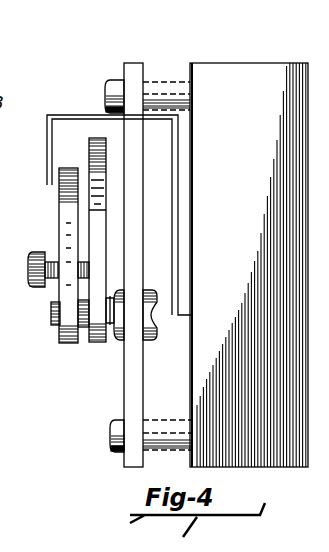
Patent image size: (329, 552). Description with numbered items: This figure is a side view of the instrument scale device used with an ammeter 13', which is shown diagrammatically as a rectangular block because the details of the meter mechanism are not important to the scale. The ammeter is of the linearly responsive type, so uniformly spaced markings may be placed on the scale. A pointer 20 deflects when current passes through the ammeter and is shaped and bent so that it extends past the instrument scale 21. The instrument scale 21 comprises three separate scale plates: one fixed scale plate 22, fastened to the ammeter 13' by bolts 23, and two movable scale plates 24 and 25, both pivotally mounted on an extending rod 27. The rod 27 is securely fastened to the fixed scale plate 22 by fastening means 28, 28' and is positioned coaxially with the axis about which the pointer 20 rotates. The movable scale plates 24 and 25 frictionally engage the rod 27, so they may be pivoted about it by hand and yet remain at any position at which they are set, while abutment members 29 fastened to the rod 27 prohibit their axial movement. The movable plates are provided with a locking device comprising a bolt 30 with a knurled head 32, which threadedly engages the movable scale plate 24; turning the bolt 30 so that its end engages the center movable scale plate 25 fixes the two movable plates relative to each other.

The ammeter 13' is at (249, 242).
The pointer 20 is at (50, 155).
The instrument scale 21 is at (70, 105).
The fixed scale plate 22 is at (134, 63).
The bolts 23 is at (108, 85).
The movable scale plate 24 is at (65, 342).
The movable scale plate 25 is at (100, 343).
The rod 27 is at (73, 349).
The fastening means 28 is at (109, 352).
The fastening means 28' is at (163, 332).
The abutment members 29 is at (53, 318).
The bolt 30 is at (52, 257).
The knurled head 32 is at (30, 282).